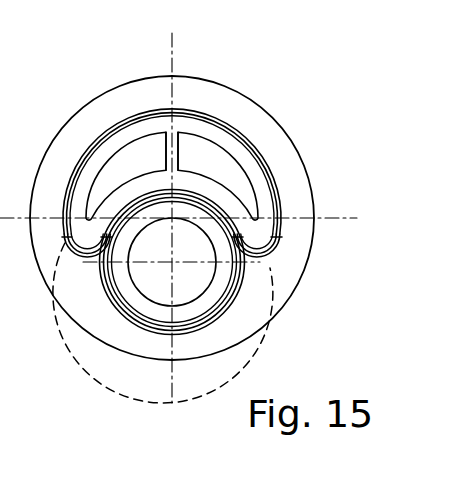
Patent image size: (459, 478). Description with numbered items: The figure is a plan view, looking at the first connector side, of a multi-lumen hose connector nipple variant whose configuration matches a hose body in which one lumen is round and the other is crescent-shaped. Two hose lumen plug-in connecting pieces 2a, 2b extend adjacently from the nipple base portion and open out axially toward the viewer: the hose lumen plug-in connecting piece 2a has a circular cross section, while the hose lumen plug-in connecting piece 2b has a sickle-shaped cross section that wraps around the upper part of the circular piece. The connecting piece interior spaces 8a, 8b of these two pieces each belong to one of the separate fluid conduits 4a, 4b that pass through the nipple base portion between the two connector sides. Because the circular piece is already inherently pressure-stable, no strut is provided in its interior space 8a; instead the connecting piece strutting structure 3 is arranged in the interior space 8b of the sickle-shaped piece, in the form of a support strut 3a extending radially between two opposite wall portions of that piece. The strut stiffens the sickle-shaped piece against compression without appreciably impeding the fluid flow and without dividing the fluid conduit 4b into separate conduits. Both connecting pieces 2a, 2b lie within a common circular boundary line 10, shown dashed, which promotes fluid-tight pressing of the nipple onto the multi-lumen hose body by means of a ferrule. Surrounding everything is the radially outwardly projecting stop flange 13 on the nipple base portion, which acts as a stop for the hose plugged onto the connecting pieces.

The hose lumen plug-in connecting piece 2a is at (222, 308).
The hose lumen plug-in connecting piece 2b is at (237, 128).
The connecting piece strutting structure 3 is at (159, 129).
The support strut 3a is at (165, 153).
The fluid conduit 4a is at (155, 288).
The fluid conduit 4b is at (194, 152).
The connecting piece interior space 8a is at (197, 273).
The connecting piece interior space 8b is at (230, 163).
The circular boundary line 10 is at (88, 292).
The stop flange 13 is at (290, 262).